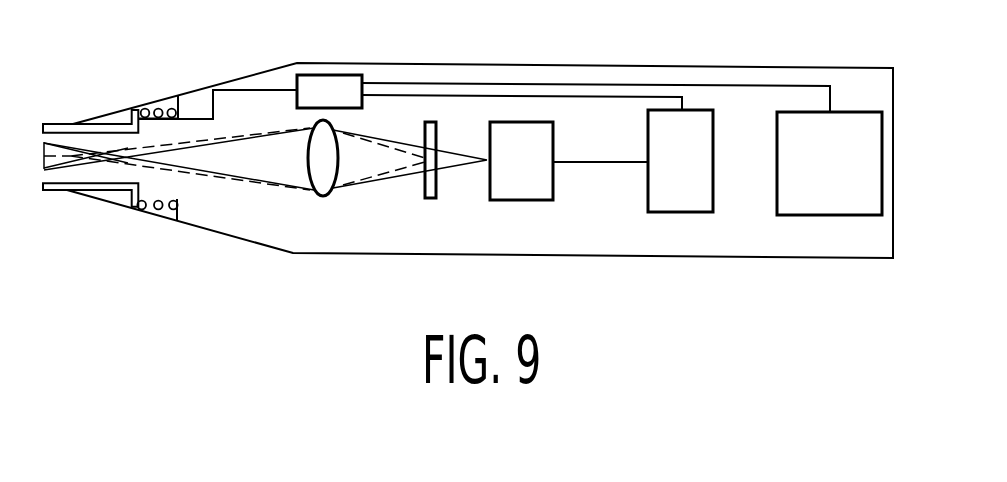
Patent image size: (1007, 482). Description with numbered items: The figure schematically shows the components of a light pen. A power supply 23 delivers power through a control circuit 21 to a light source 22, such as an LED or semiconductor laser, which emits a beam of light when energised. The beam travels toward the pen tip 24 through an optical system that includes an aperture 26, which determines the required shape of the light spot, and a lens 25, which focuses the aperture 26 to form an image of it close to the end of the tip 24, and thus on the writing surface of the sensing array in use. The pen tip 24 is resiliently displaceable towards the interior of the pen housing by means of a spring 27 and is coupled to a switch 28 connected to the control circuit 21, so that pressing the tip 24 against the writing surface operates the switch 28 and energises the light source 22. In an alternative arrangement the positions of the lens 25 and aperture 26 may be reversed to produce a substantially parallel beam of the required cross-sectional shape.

The pen tip 24 is at (52, 124).
The spring 27 is at (158, 109).
The switch 28 is at (335, 93).
The lens 25 is at (323, 178).
The aperture 26 is at (433, 198).
The light source 22 is at (528, 187).
The control circuit 21 is at (693, 187).
The power supply 23 is at (862, 188).